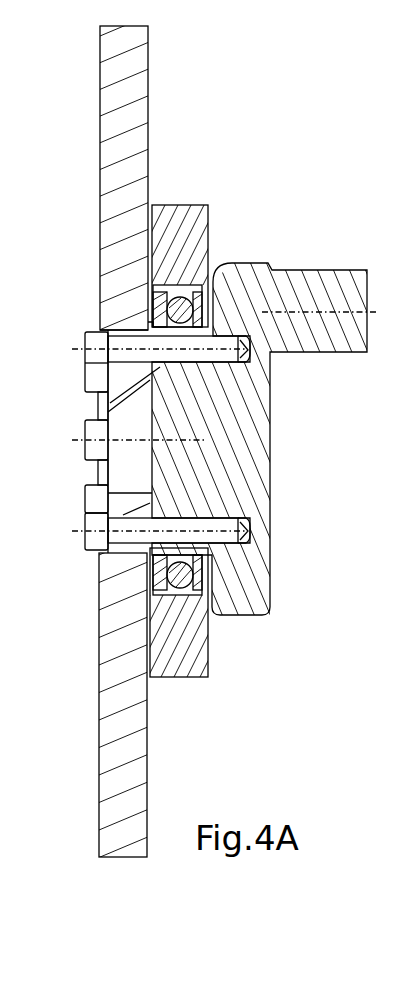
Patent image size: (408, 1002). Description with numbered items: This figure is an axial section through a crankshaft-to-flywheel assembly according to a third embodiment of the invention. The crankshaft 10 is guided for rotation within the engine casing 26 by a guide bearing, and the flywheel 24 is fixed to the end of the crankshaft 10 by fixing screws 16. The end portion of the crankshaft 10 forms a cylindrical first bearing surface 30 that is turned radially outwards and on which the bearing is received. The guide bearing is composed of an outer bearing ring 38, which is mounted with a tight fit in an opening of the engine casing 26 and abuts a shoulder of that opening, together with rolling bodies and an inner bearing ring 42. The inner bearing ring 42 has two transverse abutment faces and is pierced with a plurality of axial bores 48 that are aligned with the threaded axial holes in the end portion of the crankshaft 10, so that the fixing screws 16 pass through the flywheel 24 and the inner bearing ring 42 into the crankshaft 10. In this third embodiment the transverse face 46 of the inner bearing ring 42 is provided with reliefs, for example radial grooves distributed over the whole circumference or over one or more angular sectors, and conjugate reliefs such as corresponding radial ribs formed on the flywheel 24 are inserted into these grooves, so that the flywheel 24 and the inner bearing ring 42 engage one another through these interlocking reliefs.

The crankshaft 10 is at (333, 270).
The fixing screws 16 is at (84, 361).
The flywheel 24 is at (128, 58).
The engine casing 26 is at (173, 205).
The first bearing surface 30 is at (110, 403).
The outer bearing ring 38 is at (178, 285).
The inner bearing ring 42 is at (252, 559).
The transverse face 46 is at (160, 323).
The axial bores 48 is at (255, 518).